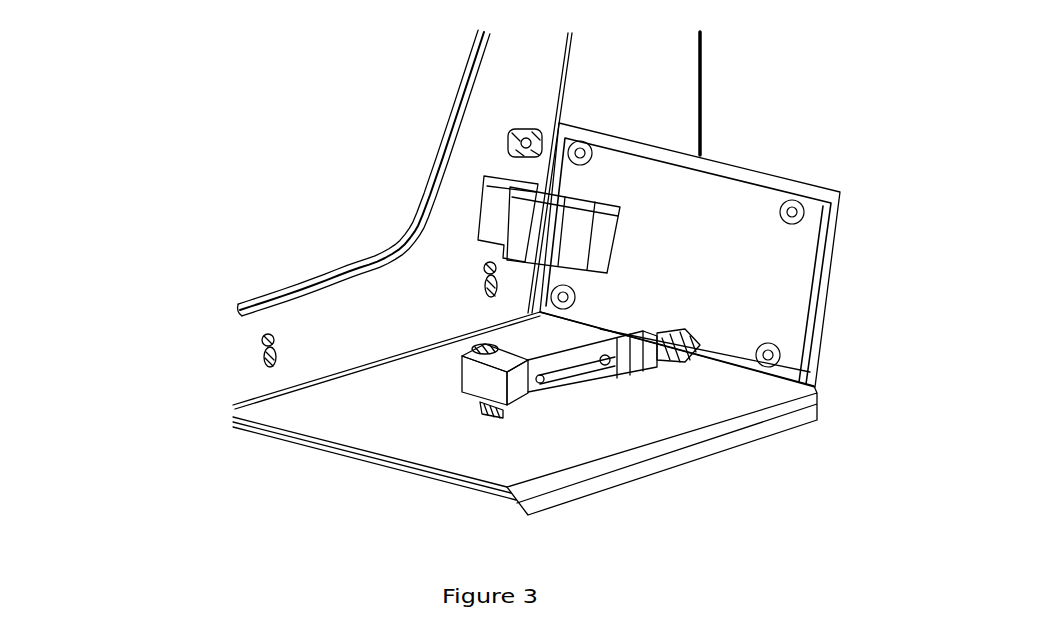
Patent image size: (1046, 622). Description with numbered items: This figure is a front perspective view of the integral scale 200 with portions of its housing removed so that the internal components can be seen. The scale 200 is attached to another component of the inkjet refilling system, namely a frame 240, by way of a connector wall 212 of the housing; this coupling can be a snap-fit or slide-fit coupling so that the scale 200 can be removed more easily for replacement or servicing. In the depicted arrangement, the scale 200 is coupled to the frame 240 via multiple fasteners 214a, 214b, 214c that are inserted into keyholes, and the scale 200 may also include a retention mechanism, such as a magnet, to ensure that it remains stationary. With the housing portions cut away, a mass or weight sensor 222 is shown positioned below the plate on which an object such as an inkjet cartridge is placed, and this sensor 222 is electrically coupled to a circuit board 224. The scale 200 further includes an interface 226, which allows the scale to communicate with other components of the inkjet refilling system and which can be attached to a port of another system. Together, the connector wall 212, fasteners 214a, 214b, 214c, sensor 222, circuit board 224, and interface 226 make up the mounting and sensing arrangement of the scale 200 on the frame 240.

The scale 200 is at (851, 168).
The connector wall 212 is at (310, 298).
The fastener 214a is at (262, 338).
The fastener 214b is at (482, 263).
The fastener 214c is at (508, 137).
The mass or weight sensor 222 is at (487, 393).
The circuit board 224 is at (690, 234).
The interface 226 is at (583, 217).
The frame 240 is at (670, 65).